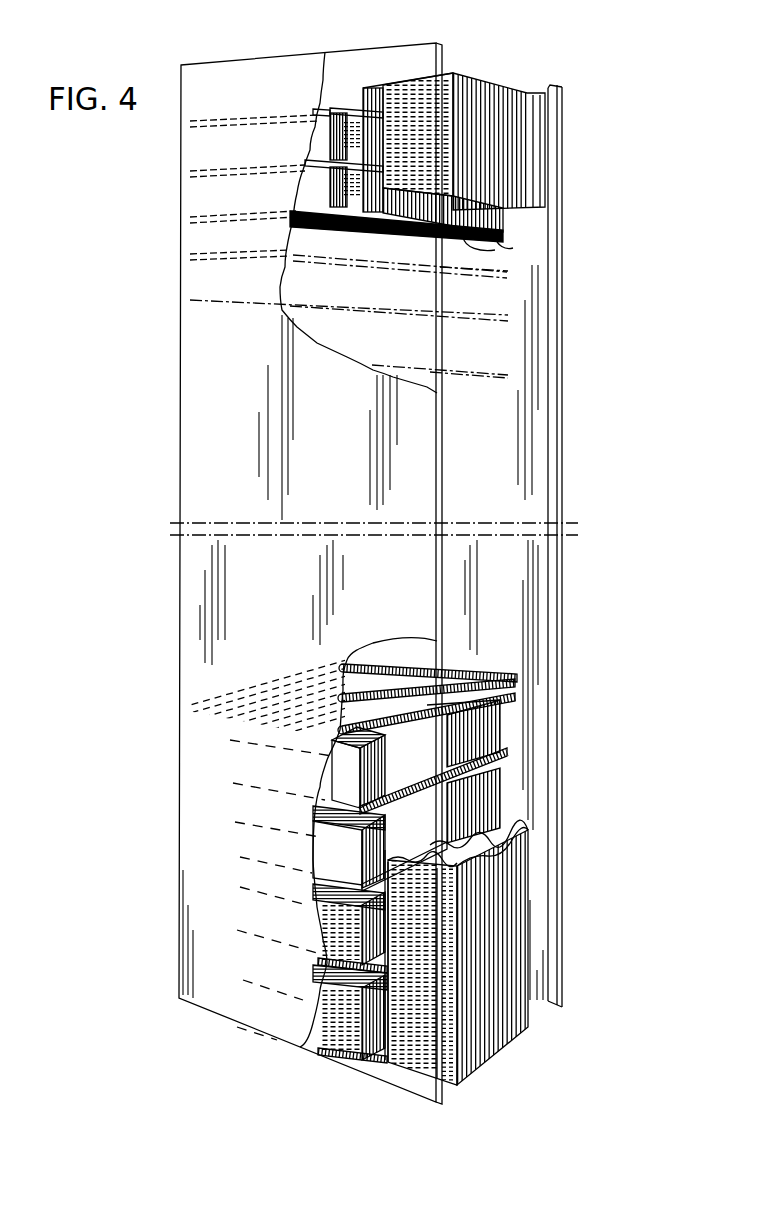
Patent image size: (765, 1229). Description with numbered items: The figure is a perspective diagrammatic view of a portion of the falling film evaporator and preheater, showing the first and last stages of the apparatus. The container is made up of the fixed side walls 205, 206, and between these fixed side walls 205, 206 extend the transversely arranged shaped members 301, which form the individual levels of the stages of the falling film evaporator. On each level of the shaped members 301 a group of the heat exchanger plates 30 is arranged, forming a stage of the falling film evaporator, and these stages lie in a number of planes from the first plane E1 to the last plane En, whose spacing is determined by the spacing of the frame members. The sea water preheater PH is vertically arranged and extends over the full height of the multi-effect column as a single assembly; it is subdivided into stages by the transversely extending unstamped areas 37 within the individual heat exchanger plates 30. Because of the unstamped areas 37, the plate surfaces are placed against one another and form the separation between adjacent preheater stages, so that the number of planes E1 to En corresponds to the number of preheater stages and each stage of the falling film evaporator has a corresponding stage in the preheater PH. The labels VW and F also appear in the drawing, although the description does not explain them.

The heat exchanger plates 30 is at (322, 194).
The unstamped areas 37 is at (446, 160).
The shaped members 301 is at (190, 255).
The fixed side wall 205 is at (213, 603).
The fixed side wall 206 is at (540, 624).
The sea water preheater PH is at (505, 165).
The distribution wall VW is at (508, 930).
The first plane E1 is at (383, 108).
The last plane En is at (378, 1060).
The flow region F is at (498, 459).